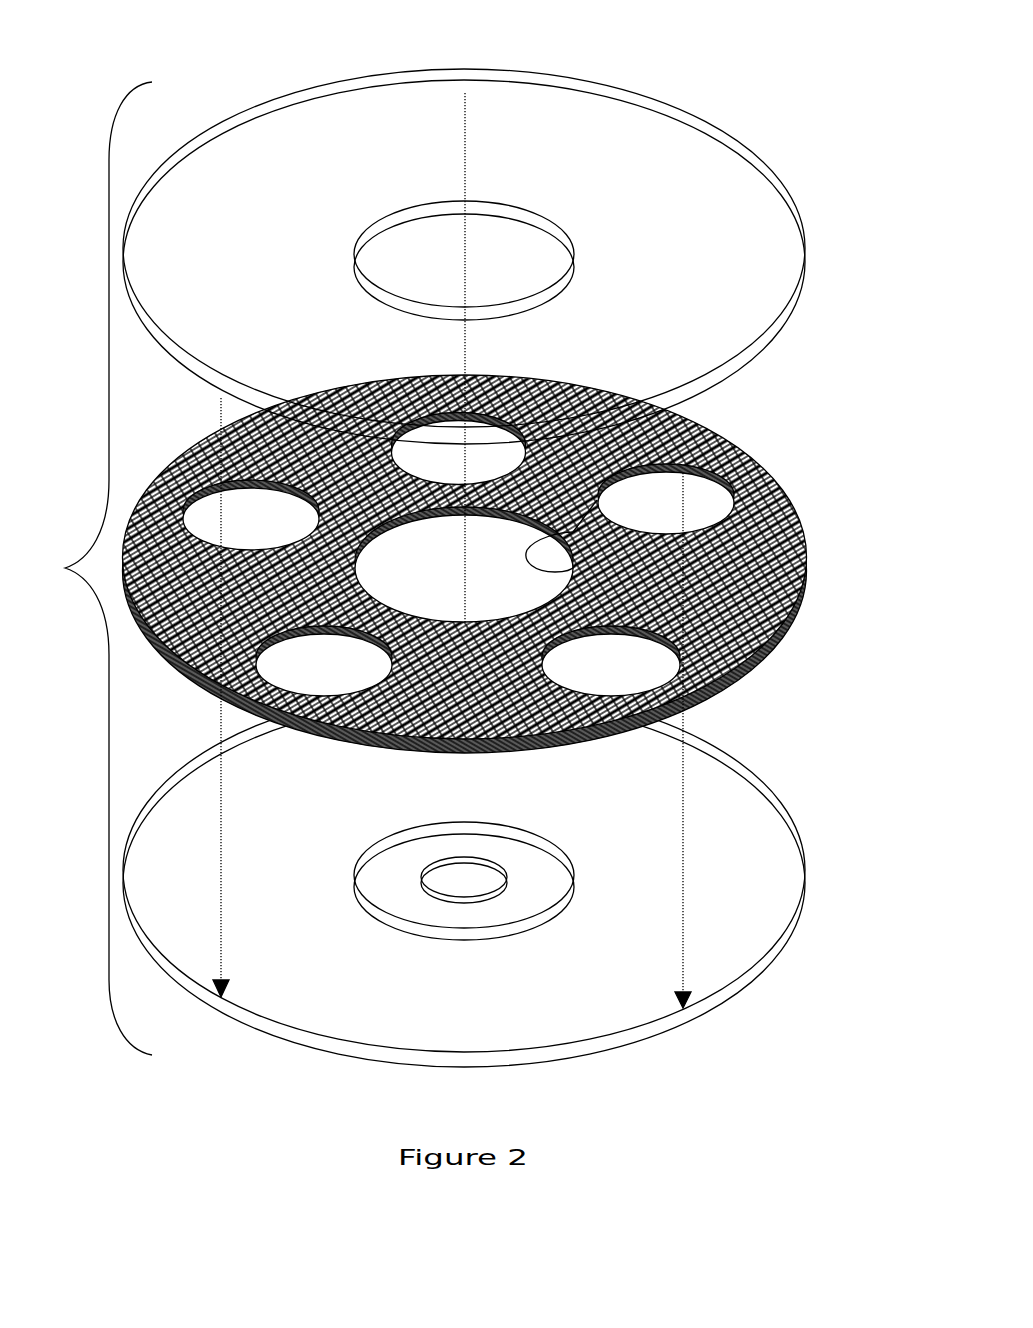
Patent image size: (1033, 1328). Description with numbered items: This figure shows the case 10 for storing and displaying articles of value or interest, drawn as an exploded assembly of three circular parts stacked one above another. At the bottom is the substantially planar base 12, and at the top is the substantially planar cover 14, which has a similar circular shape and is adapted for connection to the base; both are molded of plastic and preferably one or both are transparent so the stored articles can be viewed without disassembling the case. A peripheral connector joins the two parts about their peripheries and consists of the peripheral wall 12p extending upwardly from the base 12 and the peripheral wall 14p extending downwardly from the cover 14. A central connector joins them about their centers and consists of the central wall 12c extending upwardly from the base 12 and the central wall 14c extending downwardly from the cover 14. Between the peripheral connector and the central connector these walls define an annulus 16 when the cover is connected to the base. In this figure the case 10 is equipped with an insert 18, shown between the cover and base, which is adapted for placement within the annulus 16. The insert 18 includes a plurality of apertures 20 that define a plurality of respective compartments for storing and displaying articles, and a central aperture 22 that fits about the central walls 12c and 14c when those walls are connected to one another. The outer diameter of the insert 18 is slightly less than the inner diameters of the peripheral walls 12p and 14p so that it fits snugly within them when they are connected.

The case 10 is at (104, 568).
The base 12 is at (506, 904).
The central wall 12c is at (532, 923).
The peripheral wall 12p is at (777, 802).
The cover 14 is at (506, 238).
The central wall 14c is at (532, 207).
The peripheral wall 14p is at (618, 88).
The annulus 16 is at (300, 825).
The insert 18 is at (497, 564).
The apertures 20 is at (522, 549).
The central aperture 22 is at (605, 490).